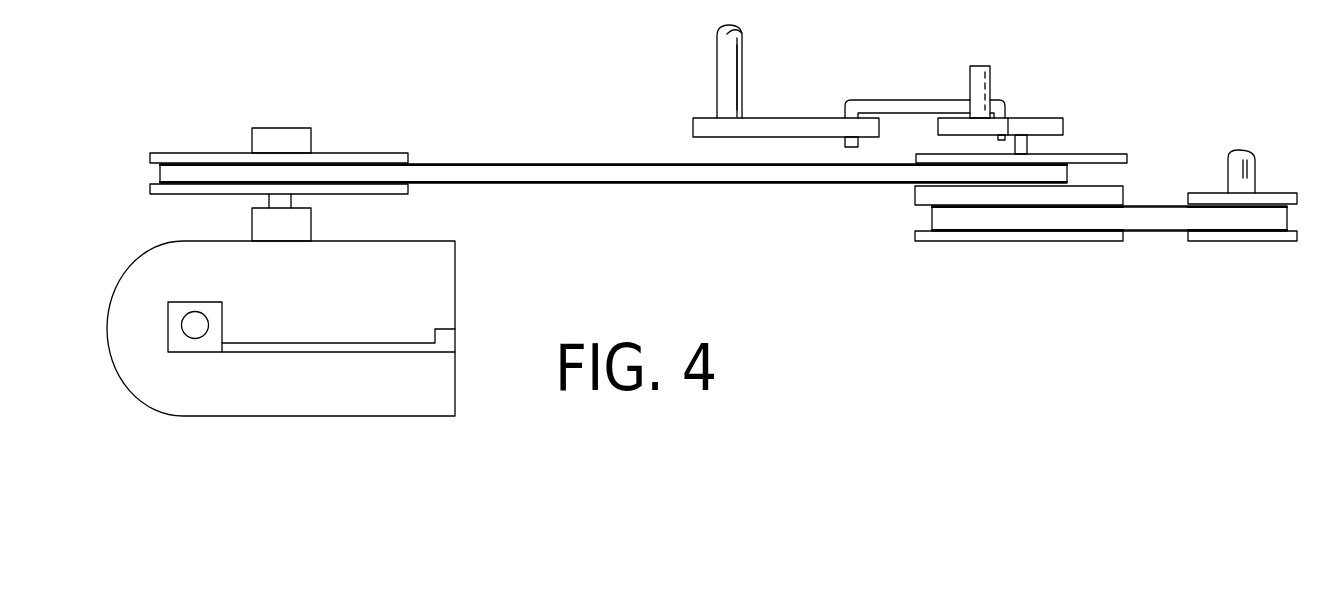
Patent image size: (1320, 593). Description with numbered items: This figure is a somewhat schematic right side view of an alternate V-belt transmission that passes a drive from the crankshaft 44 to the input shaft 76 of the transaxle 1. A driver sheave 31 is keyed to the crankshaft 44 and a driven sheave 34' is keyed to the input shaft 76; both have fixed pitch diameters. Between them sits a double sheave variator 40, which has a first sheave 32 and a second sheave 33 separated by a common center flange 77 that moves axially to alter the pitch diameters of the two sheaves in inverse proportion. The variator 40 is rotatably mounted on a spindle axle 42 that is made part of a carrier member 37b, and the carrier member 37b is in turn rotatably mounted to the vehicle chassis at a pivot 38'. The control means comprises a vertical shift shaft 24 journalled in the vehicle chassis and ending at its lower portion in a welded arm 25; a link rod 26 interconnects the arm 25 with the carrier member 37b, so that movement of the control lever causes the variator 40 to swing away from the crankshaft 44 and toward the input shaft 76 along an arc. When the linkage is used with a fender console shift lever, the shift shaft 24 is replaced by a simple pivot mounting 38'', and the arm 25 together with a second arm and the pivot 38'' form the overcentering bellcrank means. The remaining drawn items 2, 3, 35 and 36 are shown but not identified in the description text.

The transaxle 1 is at (443, 288).
The guide slot 2 is at (345, 352).
The pivot pin 3 is at (195, 330).
The input shaft 76 is at (283, 200).
The driven sheave 34' is at (279, 155).
The bar 36 is at (687, 175).
The vertical shift shaft 24 is at (733, 26).
The pivot mounting 38'' is at (767, 77).
The arm 25 is at (811, 128).
The link rod 26 is at (897, 108).
The pivot 38' is at (1016, 85).
The carrier member 37b is at (1030, 127).
The spindle axle 42 is at (1017, 148).
The second sheave 33 is at (1128, 157).
The common center flange 77 is at (1113, 198).
The double sheave variator 40 is at (1027, 197).
The bar section 35 is at (1158, 222).
The first sheave 32 is at (922, 238).
The driver sheave 31 is at (1228, 235).
The crankshaft 44 is at (1245, 150).